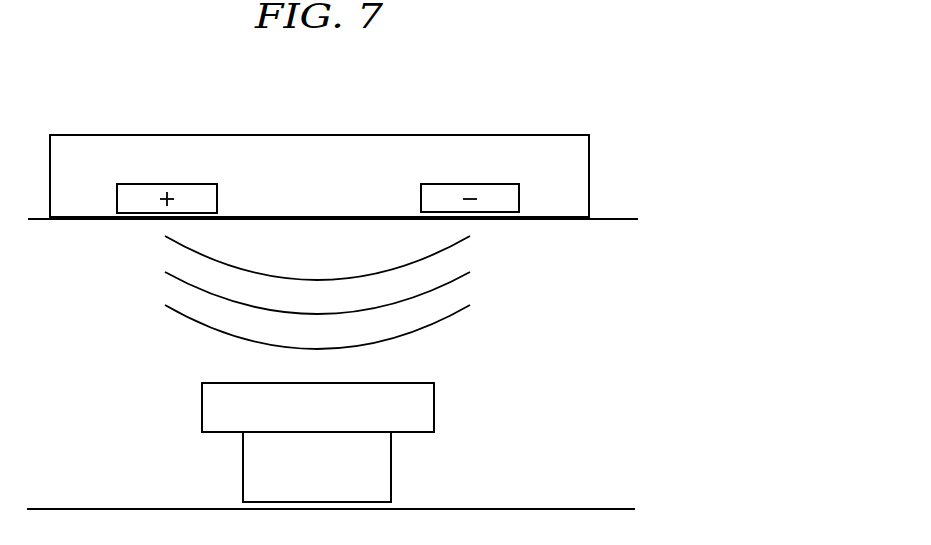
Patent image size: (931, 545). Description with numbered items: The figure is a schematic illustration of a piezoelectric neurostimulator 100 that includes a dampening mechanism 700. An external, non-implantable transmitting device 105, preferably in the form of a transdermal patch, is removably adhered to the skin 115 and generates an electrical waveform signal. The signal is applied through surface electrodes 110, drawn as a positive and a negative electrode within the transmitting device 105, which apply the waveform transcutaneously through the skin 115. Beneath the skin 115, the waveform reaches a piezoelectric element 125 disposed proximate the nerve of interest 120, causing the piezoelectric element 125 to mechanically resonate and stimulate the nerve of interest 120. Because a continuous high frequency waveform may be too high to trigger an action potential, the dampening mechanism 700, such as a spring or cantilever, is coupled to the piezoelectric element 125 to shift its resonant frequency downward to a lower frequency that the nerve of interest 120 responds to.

The neurostimulator 100 is at (337, 86).
The transmitting device 105 is at (500, 136).
The surface electrode 110 is at (141, 184).
The skin 115 is at (618, 219).
The nerve of interest 120 is at (614, 509).
The piezoelectric element 125 is at (391, 470).
The dampening mechanism 700 is at (434, 408).